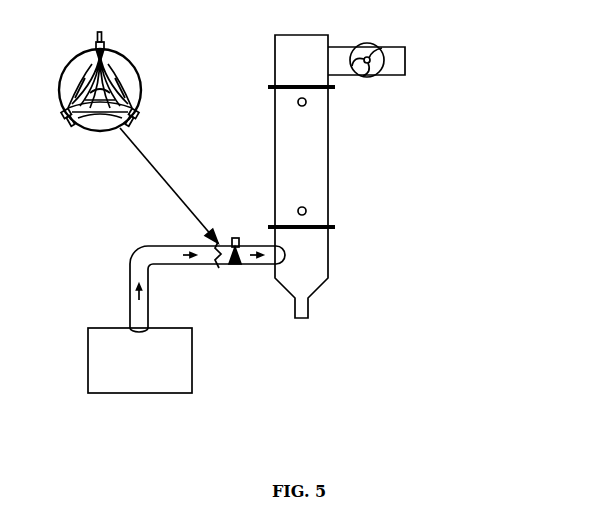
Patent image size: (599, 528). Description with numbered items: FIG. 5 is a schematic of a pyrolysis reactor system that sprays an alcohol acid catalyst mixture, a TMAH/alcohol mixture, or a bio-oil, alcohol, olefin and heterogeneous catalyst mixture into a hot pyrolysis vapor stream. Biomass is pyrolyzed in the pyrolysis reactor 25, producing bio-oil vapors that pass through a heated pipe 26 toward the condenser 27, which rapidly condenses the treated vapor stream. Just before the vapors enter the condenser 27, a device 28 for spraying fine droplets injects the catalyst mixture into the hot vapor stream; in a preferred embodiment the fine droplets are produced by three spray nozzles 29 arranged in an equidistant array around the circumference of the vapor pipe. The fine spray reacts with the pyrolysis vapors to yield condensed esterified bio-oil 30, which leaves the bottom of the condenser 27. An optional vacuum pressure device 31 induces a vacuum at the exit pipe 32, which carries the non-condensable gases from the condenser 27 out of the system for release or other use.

The pyrolysis reactor 25 is at (185, 350).
The heated pipe 26 is at (138, 275).
The condenser 27 is at (310, 153).
The device for spraying fine droplets 28 is at (235, 238).
The spray nozzles 29 is at (144, 58).
The condensed esterified bio-oil 30 is at (302, 318).
The vacuum pressure device 31 is at (373, 75).
The exit pipe 32 is at (407, 60).